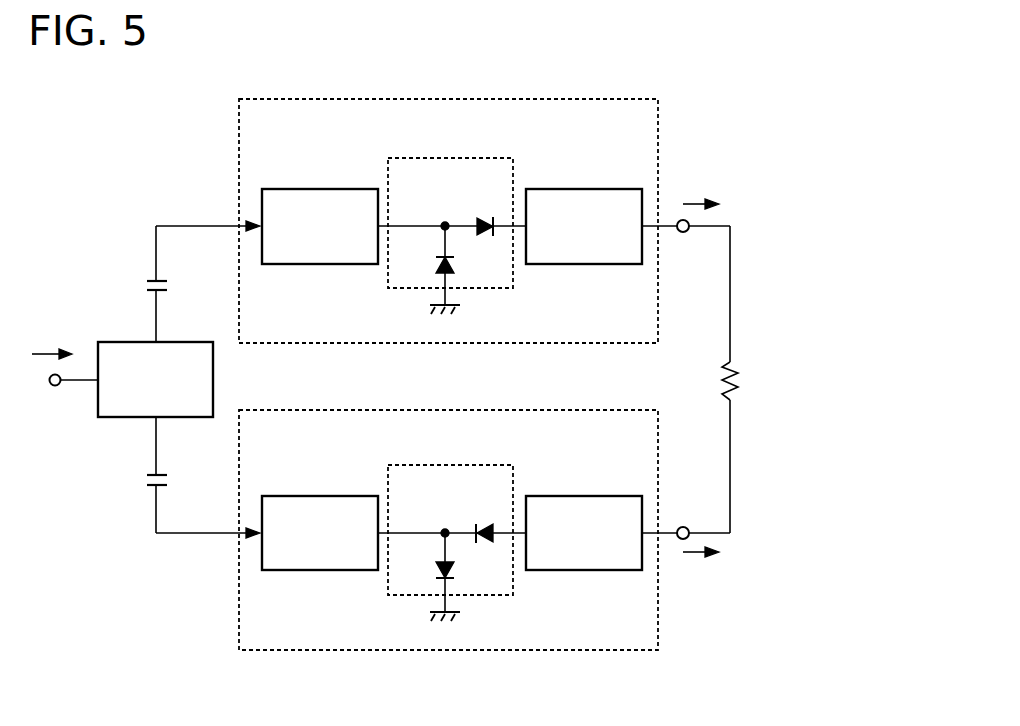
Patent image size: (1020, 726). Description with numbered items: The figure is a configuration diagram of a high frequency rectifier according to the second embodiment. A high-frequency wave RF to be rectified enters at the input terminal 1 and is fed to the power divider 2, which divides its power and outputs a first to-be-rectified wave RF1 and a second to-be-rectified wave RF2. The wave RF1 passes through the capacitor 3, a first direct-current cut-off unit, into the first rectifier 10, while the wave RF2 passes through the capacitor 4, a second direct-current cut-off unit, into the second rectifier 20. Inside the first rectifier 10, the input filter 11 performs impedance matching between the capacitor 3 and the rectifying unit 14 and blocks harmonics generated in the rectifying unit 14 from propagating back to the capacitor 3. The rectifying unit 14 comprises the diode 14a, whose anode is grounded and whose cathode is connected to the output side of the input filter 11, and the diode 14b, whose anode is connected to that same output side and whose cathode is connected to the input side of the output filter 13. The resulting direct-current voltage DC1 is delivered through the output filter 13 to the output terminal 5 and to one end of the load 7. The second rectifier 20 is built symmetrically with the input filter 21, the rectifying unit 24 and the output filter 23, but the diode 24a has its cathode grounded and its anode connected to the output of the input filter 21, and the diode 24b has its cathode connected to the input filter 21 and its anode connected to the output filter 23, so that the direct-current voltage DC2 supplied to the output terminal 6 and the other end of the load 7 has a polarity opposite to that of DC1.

The input terminal 1 is at (55, 386).
The power divider 2 is at (124, 342).
The capacitor 3 is at (147, 281).
The capacitor 4 is at (147, 487).
The output terminal 5 is at (683, 232).
The output terminal 6 is at (683, 527).
The load 7 is at (733, 401).
The first rectifier 10 is at (597, 99).
The input filter 11 is at (345, 189).
The output filter 13 is at (600, 189).
The rectifying unit 14 is at (463, 158).
The diode 14a is at (455, 265).
The diode 14b is at (488, 222).
The second rectifier 20 is at (597, 410).
The input filter 21 is at (345, 496).
The output filter 23 is at (600, 496).
The rectifying unit 24 is at (463, 465).
The diode 24a is at (455, 572).
The diode 24b is at (488, 529).